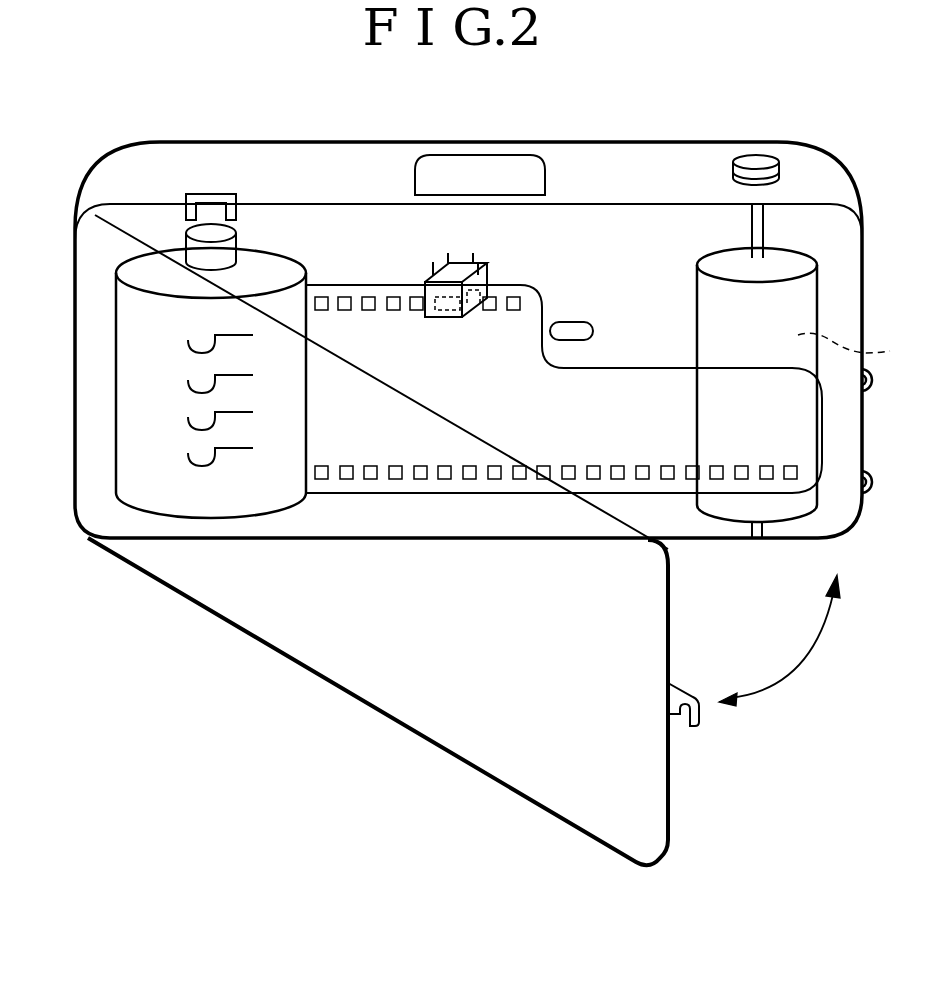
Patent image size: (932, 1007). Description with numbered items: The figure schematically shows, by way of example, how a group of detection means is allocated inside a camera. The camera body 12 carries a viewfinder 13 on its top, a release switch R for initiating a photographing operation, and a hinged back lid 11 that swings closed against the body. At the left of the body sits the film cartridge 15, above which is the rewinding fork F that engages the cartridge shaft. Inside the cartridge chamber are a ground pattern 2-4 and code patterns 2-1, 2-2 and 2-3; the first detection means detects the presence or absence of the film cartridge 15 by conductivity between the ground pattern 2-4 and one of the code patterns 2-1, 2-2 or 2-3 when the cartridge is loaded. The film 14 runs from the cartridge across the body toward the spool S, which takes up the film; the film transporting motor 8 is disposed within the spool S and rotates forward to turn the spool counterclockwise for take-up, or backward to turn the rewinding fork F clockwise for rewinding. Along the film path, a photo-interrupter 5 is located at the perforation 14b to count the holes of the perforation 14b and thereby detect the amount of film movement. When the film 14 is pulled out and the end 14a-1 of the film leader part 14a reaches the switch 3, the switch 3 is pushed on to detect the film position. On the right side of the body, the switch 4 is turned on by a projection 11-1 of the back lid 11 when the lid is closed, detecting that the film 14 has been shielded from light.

The rewinding fork F is at (215, 194).
The viewfinder 13 is at (508, 170).
The release switch R is at (760, 160).
The camera body 12 is at (848, 180).
The film cartridge 15 is at (273, 252).
The film perforation 14b is at (370, 293).
The photo-interrupter 5 is at (487, 272).
The film 14 is at (564, 356).
The switch 3 is at (594, 322).
The film leader part 14a is at (662, 398).
The end of film leader part 14a-1 is at (548, 352).
The spool S is at (818, 290).
The film transporting motor 8 is at (853, 350).
The switch 4 is at (872, 383).
The code pattern 2-1 is at (233, 343).
The code pattern 2-2 is at (233, 383).
The code pattern 2-3 is at (233, 420).
The ground pattern 2-4 is at (233, 456).
The projection 11-1 is at (702, 712).
The back lid 11 is at (668, 803).